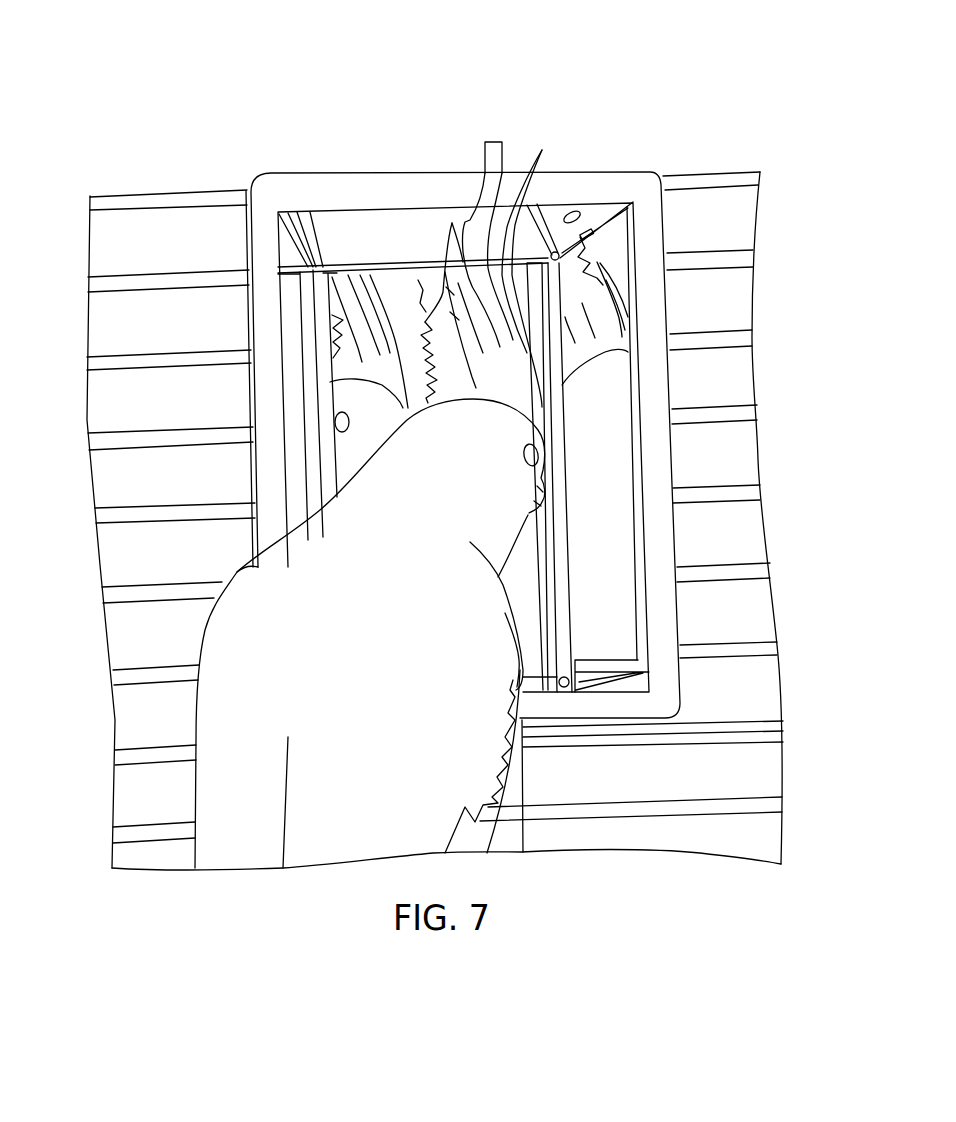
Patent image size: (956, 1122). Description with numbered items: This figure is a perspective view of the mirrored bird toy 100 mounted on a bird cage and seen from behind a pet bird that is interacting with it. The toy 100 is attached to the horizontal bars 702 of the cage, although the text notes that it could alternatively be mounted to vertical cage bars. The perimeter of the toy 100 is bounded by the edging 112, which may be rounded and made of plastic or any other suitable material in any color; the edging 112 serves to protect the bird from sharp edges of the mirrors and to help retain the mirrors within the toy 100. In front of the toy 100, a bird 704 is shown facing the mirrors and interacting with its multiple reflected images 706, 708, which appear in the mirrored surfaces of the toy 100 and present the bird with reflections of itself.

The mirrored bird toy 100 is at (607, 92).
The edging 112 is at (301, 190).
The horizontal bars 702 is at (90, 359).
The bird 704 is at (343, 852).
The reflected image 706 is at (387, 292).
The reflected image 708 is at (614, 294).